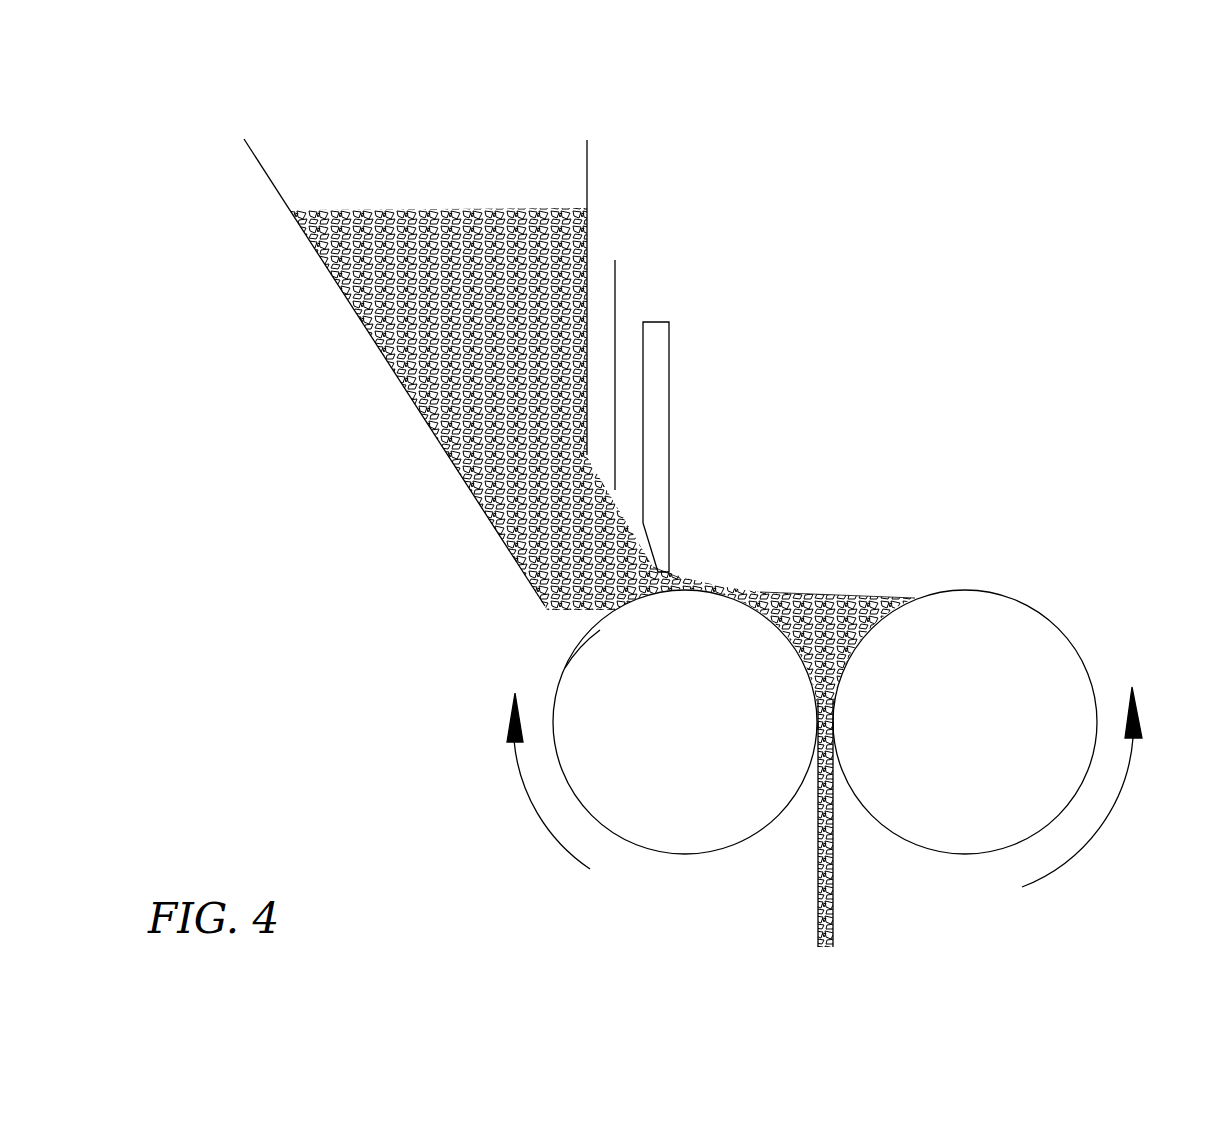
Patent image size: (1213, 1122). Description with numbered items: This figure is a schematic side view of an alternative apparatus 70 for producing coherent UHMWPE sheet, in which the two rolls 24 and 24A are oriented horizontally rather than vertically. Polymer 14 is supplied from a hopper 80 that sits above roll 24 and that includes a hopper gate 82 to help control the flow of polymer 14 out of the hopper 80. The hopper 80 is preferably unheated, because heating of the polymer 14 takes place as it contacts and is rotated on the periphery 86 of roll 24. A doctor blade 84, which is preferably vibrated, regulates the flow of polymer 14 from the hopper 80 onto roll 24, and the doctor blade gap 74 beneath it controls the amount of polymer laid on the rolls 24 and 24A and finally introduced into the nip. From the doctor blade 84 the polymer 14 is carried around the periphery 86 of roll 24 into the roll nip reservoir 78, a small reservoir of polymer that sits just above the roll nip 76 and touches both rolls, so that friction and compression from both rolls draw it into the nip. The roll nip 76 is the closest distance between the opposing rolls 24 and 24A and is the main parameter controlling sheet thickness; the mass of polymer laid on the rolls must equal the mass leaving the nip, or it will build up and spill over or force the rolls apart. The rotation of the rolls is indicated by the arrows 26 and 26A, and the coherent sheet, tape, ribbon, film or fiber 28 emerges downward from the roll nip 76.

The polymer 14 is at (448, 215).
The hopper 80 is at (275, 186).
The hopper gate 82 is at (617, 273).
The doctor blade 84 is at (657, 332).
The doctor blade gap 74 is at (672, 575).
The roll nip reservoir 78 is at (817, 600).
The roll 24 is at (668, 731).
The roll 24A is at (987, 731).
The periphery of roll 86 is at (565, 668).
The roll nip 76 is at (834, 720).
The coherent sheet, tape, ribbon, film or fiber 28 is at (817, 887).
The rotation direction of first roller 26 is at (536, 812).
The rotation direction of second roller 26A is at (1107, 815).
The alternative apparatus 70 is at (400, 728).